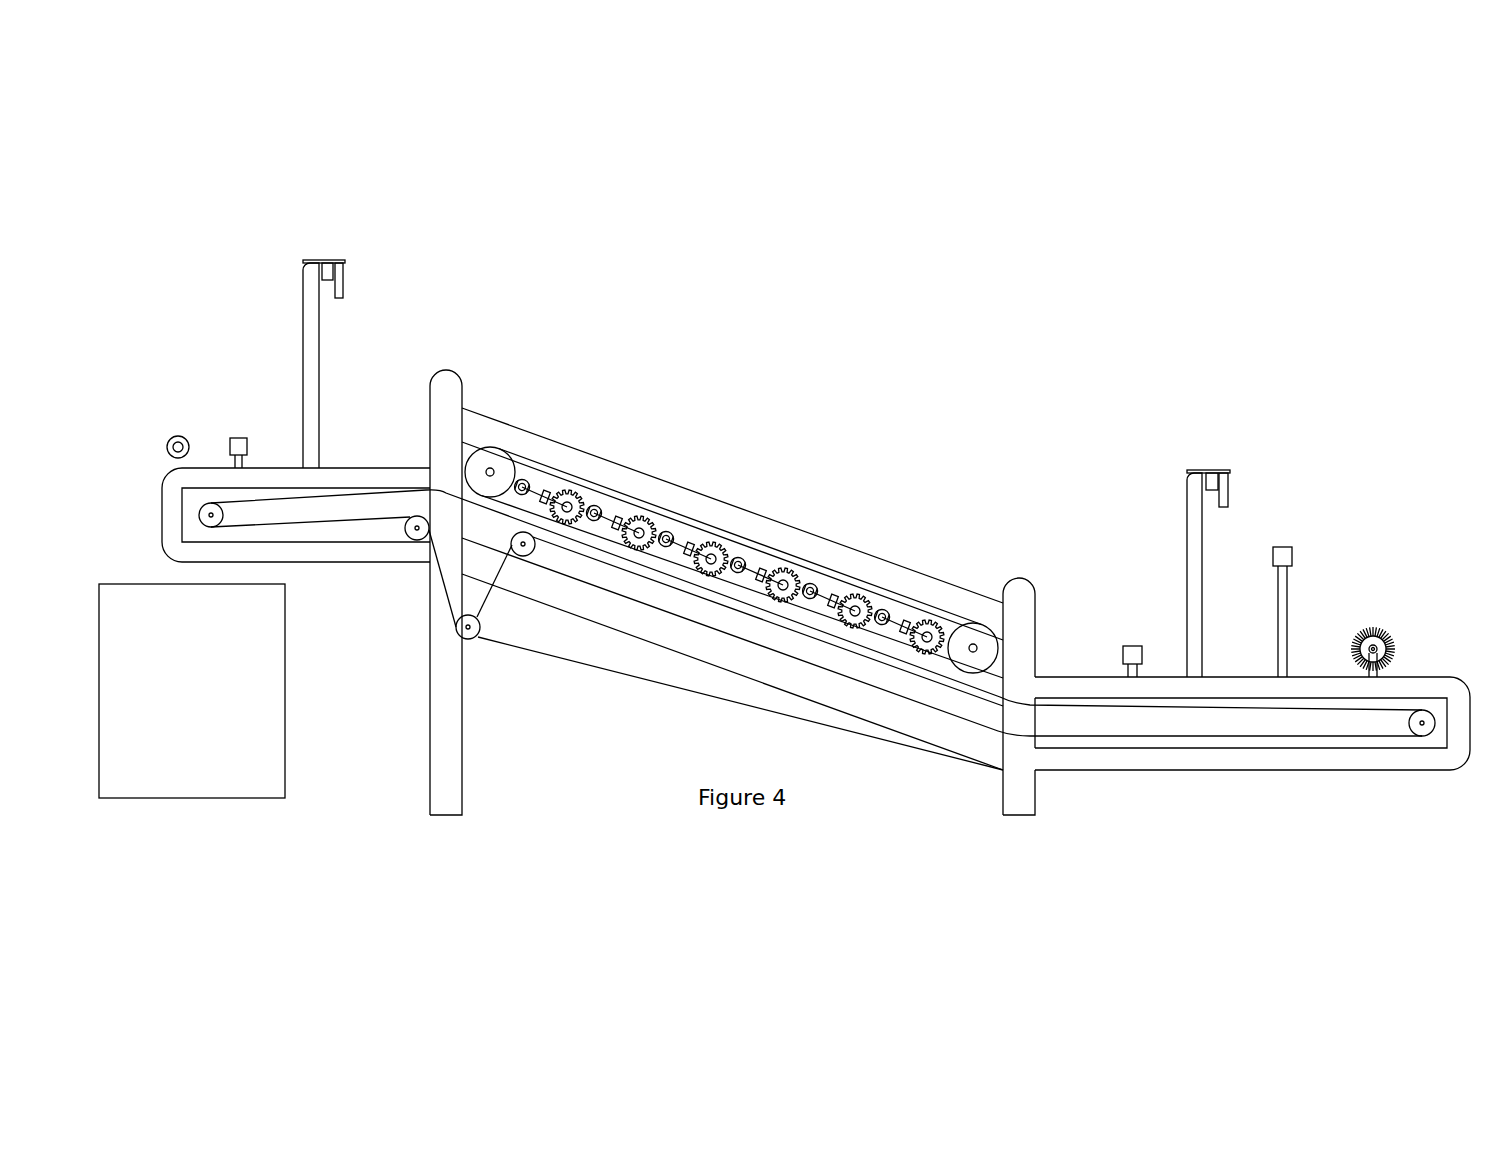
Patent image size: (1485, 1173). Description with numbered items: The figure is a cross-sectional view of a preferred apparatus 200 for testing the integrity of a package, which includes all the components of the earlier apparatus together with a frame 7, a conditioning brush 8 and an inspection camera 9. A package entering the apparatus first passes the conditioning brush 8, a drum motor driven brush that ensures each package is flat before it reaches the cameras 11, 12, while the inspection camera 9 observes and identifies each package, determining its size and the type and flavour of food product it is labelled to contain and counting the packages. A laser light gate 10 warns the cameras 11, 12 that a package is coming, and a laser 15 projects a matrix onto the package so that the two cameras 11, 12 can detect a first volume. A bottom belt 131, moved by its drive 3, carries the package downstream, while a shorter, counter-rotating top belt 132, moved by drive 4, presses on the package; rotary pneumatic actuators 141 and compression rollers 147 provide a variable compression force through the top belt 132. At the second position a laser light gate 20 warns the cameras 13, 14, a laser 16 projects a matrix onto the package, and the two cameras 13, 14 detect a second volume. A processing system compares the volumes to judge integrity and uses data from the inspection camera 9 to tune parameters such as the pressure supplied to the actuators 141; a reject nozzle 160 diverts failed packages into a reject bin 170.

The apparatus 200 is at (908, 267).
The reject bin 170 is at (192, 691).
The reject nozzle 160 is at (172, 440).
The laser light gate 20 is at (242, 440).
The camera 13 is at (362, 240).
The camera 14 is at (333, 260).
The laser 16 is at (343, 284).
The frame 7 is at (458, 738).
The drive 3 is at (473, 627).
The rotary pneumatic actuators 141 is at (533, 485).
The compression rollers 147 is at (575, 508).
The top belt 132 is at (953, 612).
The drive 4 is at (973, 653).
The laser light gate 10 is at (1133, 646).
The camera 11 is at (1210, 449).
The camera 12 is at (1212, 472).
The laser 15 is at (1227, 493).
The inspection camera 9 is at (1292, 554).
The conditioning brush 8 is at (1388, 637).
The bottom belt 131 is at (1255, 738).